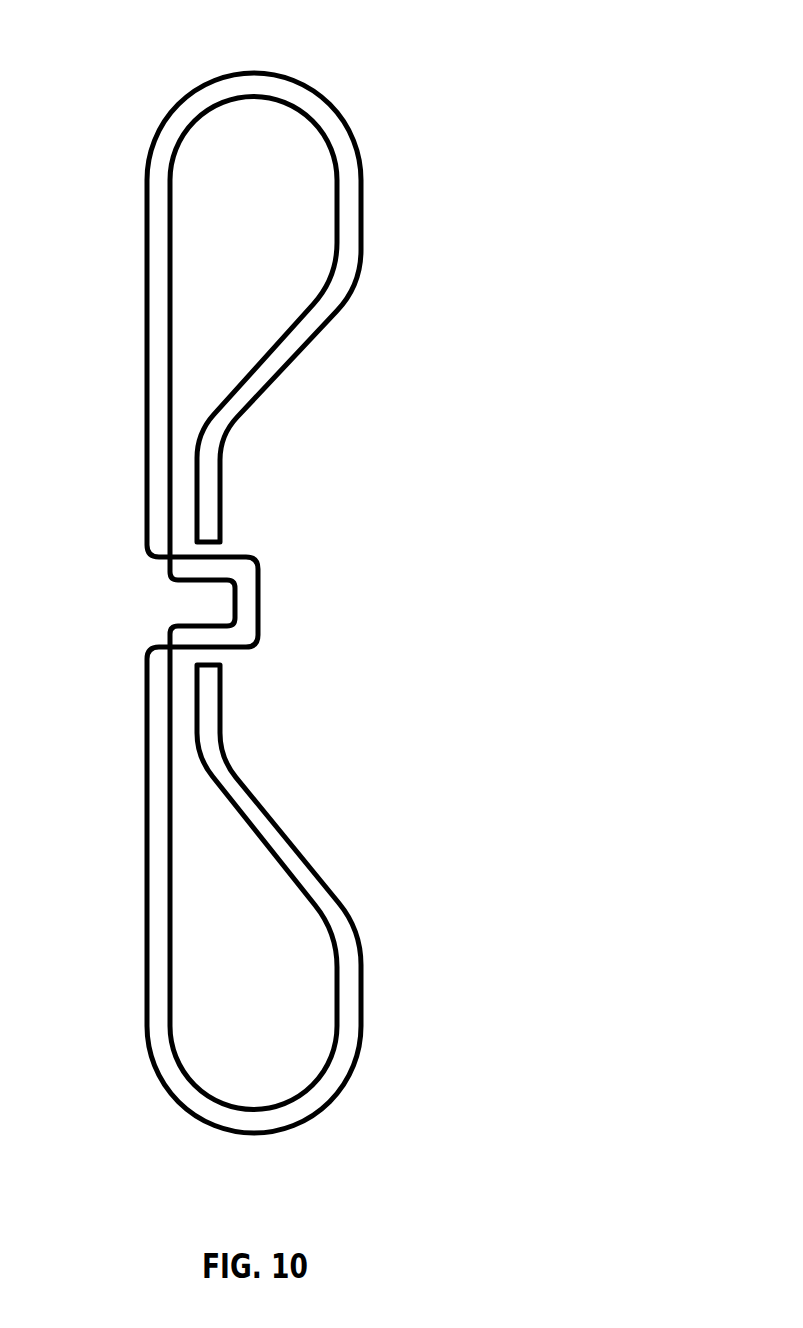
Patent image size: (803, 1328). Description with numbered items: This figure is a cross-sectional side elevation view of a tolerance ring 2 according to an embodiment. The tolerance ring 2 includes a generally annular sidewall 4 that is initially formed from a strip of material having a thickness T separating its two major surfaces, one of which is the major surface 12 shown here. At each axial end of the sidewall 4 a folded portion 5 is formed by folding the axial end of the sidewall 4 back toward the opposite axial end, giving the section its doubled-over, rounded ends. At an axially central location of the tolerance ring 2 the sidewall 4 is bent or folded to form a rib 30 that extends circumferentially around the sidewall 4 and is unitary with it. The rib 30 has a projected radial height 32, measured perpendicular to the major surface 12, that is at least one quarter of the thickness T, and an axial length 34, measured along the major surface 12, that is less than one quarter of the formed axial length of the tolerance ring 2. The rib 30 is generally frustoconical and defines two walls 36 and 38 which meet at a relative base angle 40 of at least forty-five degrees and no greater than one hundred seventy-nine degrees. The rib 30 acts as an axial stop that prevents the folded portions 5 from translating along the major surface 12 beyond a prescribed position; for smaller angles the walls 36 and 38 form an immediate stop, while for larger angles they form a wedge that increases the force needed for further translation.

The tolerance ring 2 is at (446, 18).
The sidewall 4 is at (343, 166).
The folded portion 5 is at (296, 95).
The major surface 12 is at (175, 348).
The rib 30 is at (262, 590).
The projected radial height 32 is at (170, 593).
The axial length 34 is at (107, 551).
The wall 36 is at (233, 556).
The wall 38 is at (233, 650).
The relative base angle 40 is at (176, 518).
The thickness T is at (218, 937).